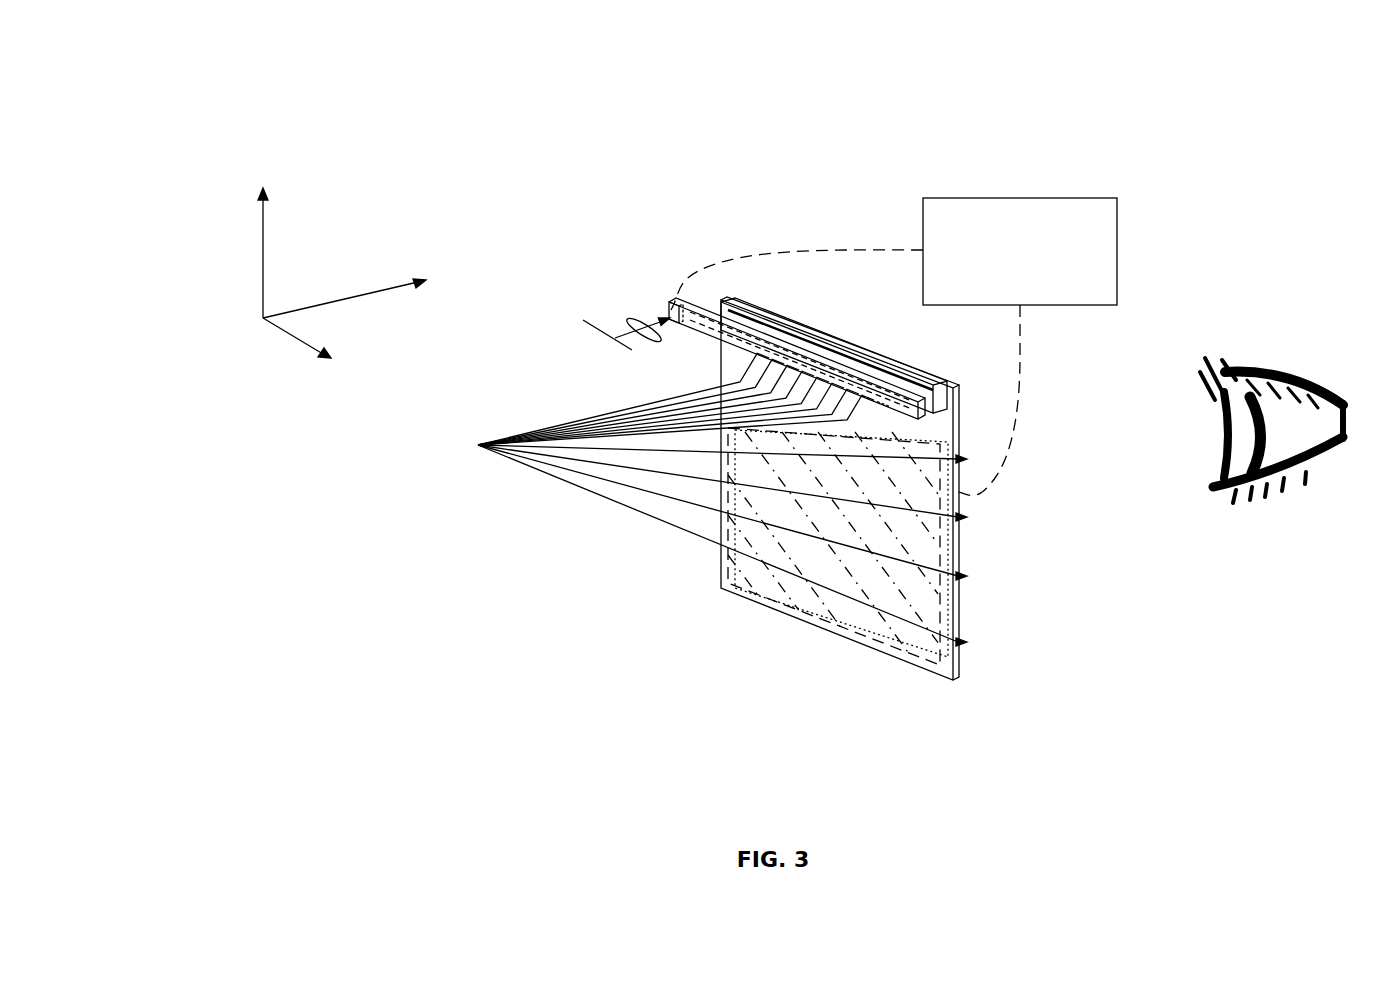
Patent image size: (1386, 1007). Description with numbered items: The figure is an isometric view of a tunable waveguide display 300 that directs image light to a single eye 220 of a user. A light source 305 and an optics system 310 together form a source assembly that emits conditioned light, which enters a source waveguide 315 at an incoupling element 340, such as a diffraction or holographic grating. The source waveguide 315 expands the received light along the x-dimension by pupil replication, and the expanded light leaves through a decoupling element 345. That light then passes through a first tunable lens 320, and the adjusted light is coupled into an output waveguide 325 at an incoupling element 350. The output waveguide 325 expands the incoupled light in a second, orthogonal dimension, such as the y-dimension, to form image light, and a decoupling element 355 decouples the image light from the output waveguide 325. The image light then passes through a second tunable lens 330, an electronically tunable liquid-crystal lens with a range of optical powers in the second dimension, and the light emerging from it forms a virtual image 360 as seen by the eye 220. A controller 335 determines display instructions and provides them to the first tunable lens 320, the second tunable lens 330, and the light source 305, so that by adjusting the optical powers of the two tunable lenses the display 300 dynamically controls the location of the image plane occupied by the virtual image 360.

The tunable waveguide display 300 is at (163, 92).
The light source 305 is at (615, 334).
The optics system 310 is at (637, 323).
The source waveguide 315 is at (687, 318).
The first tunable lens 320 is at (726, 306).
The output waveguide 325 is at (838, 627).
The second tunable lens 330 is at (960, 665).
The controller 335 is at (894, 347).
The incoupling element 340 is at (668, 308).
The decoupling element 345 is at (955, 491).
The incoupling element 350 is at (940, 404).
The decoupling element 355 is at (835, 627).
The virtual image 360 is at (642, 499).
The eye 220 is at (1271, 453).